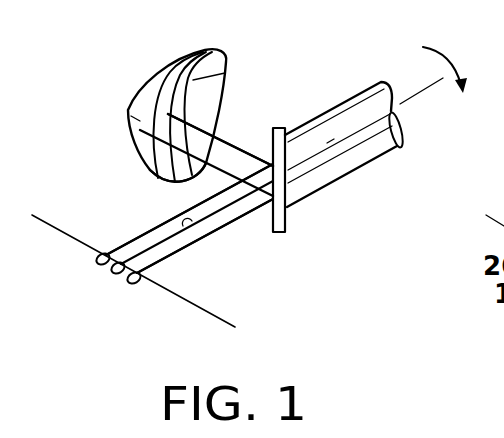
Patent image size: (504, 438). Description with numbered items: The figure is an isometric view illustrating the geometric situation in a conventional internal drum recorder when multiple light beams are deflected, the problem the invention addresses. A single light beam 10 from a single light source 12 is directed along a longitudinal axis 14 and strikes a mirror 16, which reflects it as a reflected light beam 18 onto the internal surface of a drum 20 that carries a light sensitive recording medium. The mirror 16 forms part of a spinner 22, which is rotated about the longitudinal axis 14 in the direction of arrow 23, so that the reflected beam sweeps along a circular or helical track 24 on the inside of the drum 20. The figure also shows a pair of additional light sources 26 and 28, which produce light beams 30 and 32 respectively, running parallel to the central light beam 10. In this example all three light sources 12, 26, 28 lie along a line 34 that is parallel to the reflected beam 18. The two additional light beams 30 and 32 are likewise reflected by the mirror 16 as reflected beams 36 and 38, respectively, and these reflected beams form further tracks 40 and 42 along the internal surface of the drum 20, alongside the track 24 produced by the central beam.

The light beam 10 is at (192, 230).
The light source 12 is at (112, 280).
The longitudinal axis 14 is at (413, 95).
The mirror 16 is at (287, 233).
The reflected light beam 18 is at (229, 146).
The drum 20 is at (135, 133).
The spinner 22 is at (380, 157).
The arrow 23 is at (448, 60).
The track 24 is at (178, 67).
The additional light source 26 is at (95, 261).
The additional light source 28 is at (130, 285).
The light beam 30 is at (130, 245).
The light beam 32 is at (246, 218).
The line 34 is at (183, 300).
The reflected beam 36 is at (220, 172).
The reflected beam 38 is at (253, 131).
The track 40 is at (157, 100).
The track 42 is at (226, 73).